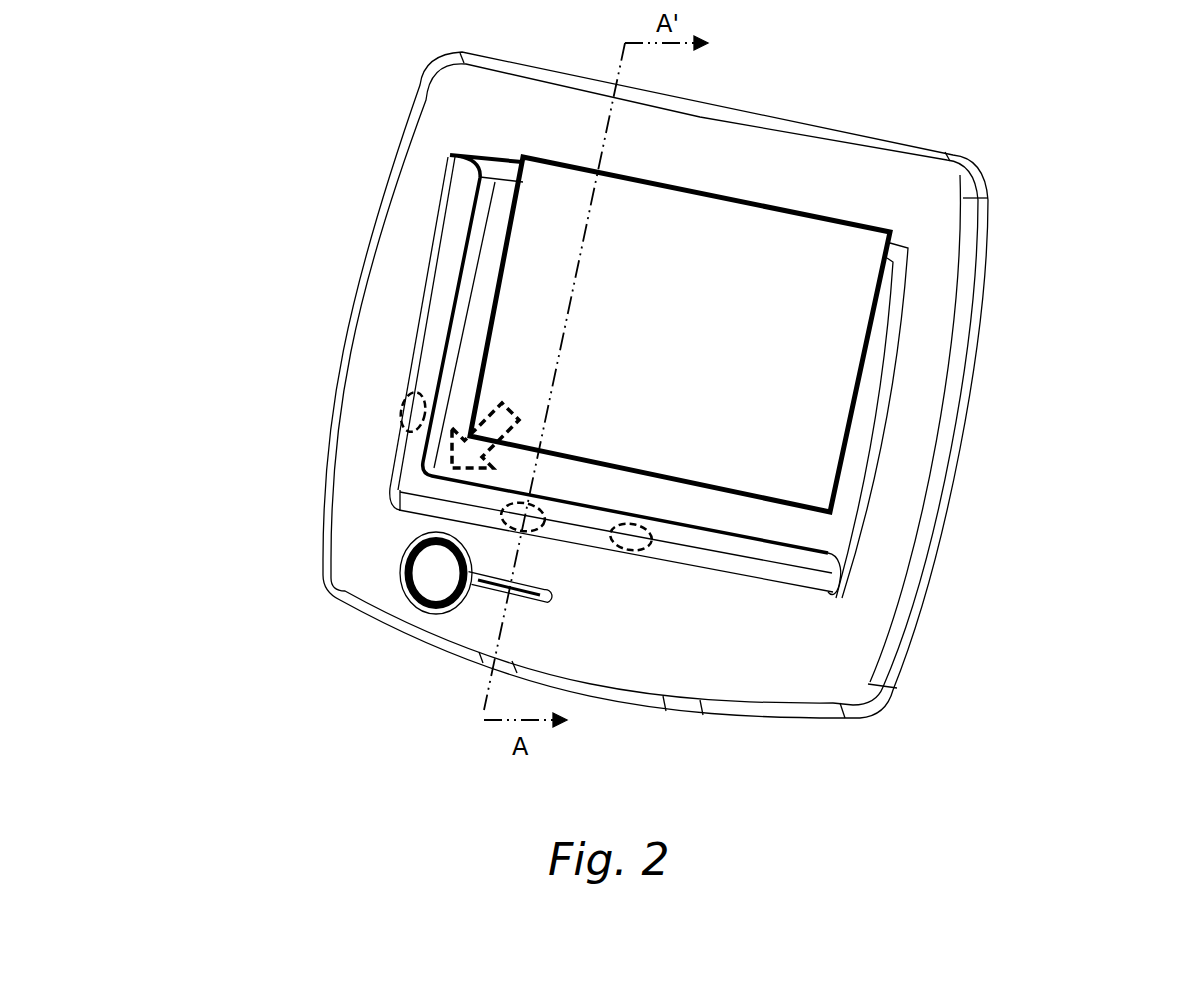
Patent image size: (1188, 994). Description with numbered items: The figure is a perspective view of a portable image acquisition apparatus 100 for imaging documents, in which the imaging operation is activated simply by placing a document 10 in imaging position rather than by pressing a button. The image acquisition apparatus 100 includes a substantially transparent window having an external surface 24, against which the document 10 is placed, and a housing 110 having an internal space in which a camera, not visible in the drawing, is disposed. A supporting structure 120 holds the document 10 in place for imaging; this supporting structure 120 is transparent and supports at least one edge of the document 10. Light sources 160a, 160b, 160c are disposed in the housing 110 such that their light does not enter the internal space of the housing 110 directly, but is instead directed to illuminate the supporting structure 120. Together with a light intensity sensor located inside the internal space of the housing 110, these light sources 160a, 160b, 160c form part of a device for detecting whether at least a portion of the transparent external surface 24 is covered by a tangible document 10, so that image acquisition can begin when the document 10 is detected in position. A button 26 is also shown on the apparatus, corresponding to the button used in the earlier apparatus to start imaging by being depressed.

The document 10 is at (810, 278).
The external surface of transparent window 24 is at (803, 532).
The button 26 is at (433, 578).
The image acquisition apparatus 100 is at (373, 209).
The housing 110 is at (988, 185).
The supporting structure 120 is at (805, 585).
The light source 160a is at (503, 517).
The light source 160b is at (405, 408).
The light source 160c is at (640, 542).